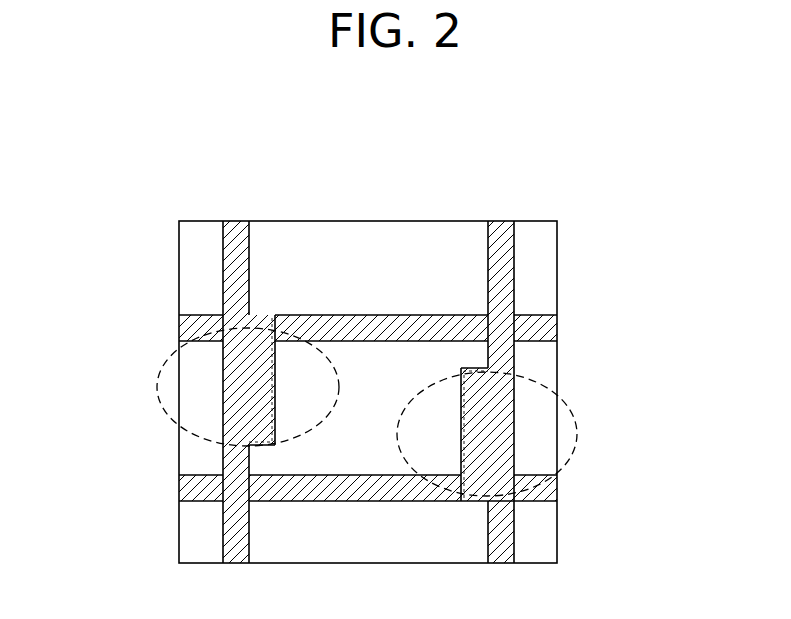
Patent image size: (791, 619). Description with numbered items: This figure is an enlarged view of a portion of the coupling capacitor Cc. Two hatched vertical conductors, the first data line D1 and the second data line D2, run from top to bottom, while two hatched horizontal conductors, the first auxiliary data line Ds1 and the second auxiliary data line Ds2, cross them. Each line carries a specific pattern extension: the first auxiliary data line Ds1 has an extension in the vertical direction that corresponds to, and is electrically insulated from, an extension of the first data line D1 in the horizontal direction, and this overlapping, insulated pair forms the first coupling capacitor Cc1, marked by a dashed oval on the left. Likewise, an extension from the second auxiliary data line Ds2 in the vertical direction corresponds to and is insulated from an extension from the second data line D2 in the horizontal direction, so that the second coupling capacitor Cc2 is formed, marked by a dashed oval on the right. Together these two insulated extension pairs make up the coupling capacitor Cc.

The coupling capacitor Cc is at (201, 210).
The first data line D1 is at (235, 230).
The second data line D2 is at (503, 228).
The first auxiliary data line Ds1 is at (545, 328).
The second auxiliary data line Ds2 is at (555, 488).
The first coupling capacitor Cc1 is at (158, 398).
The second coupling capacitor Cc2 is at (578, 432).